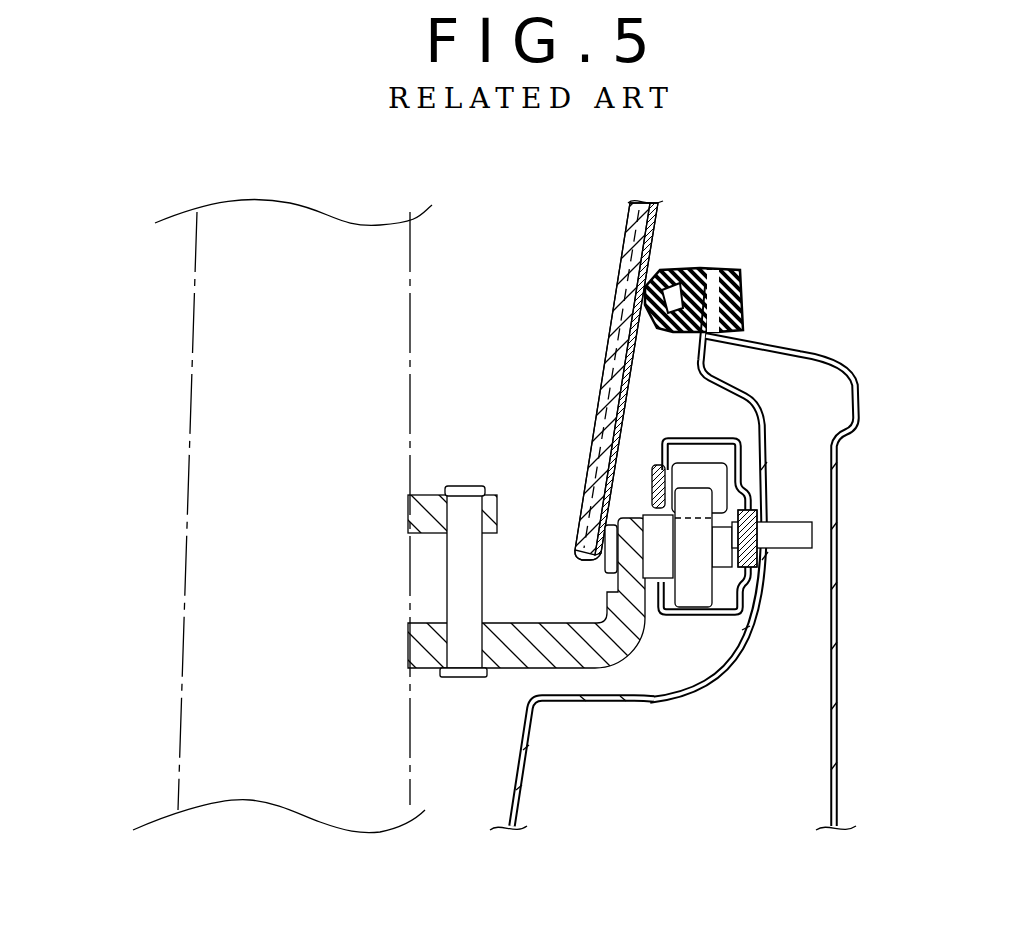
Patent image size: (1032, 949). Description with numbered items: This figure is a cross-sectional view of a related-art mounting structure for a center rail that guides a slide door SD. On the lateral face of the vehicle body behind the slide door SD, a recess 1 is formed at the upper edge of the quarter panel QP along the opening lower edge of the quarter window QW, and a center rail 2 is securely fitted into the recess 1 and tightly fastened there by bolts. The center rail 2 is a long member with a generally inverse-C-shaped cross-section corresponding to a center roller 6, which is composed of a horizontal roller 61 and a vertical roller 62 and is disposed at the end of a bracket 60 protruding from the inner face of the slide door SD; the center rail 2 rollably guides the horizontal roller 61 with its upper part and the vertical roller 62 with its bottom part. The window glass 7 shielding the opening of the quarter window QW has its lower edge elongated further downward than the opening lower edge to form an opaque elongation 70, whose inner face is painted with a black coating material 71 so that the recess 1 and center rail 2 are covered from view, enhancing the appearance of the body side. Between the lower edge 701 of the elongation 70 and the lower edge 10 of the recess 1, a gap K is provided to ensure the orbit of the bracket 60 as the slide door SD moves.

The recess 1 is at (690, 640).
The center rail 2 is at (724, 410).
The center roller 6 is at (727, 457).
The horizontal roller 61 is at (707, 478).
The vertical roller 62 is at (697, 578).
The window glass 7 is at (610, 236).
The opaque elongation 70 is at (617, 303).
The black coating material 71 is at (645, 393).
The lower edge of the elongation 701 is at (580, 560).
The lower edge of the recess 10 is at (535, 696).
The bracket 60 is at (577, 668).
The slide door SD is at (190, 362).
The gap K is at (573, 592).
The quarter panel QP is at (512, 773).
The quarter window QW is at (697, 225).